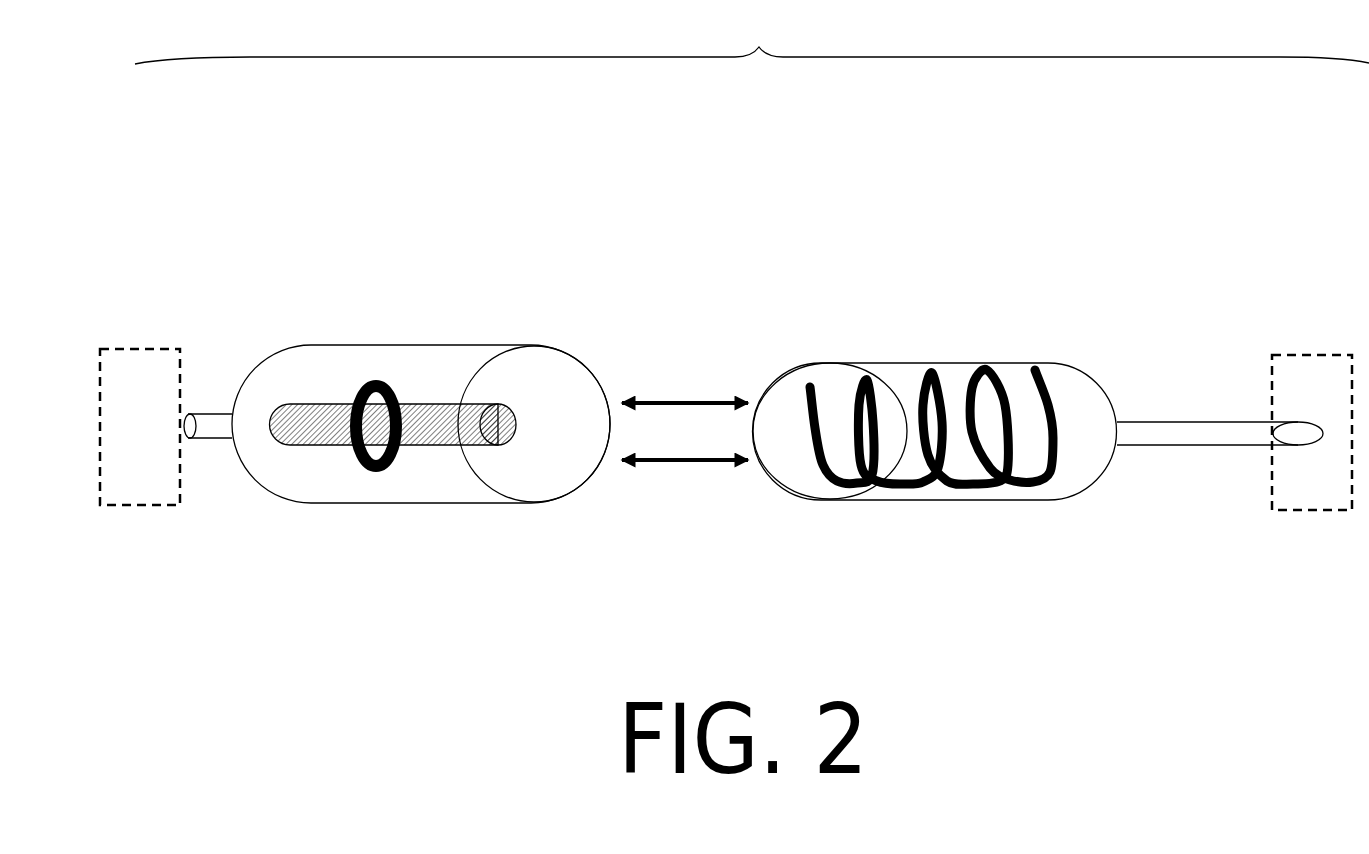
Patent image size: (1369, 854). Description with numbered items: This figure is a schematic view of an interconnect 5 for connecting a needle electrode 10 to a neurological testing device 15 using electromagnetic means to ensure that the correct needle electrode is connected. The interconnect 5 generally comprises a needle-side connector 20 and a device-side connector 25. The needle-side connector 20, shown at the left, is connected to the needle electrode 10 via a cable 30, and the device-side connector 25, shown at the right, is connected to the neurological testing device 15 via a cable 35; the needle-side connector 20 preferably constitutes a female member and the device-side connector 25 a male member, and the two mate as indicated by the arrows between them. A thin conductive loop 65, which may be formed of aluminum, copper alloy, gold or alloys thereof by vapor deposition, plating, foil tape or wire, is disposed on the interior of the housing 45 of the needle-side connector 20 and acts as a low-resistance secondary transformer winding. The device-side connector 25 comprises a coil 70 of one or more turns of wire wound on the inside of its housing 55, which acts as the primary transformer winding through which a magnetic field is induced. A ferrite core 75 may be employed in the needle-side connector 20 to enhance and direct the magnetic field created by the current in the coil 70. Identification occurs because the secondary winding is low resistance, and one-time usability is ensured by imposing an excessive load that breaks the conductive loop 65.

The interconnect 5 is at (752, 37).
The needle electrode 10 is at (125, 528).
The neurological testing device 15 is at (1307, 528).
The needle-side connector 20 is at (548, 322).
The device-side connector 25 is at (798, 342).
The cable 30 is at (208, 452).
The cable 35 is at (1197, 449).
The housing 45 is at (308, 347).
The housing 55 is at (1067, 358).
The conductive loop 65 is at (355, 465).
The coil 70 is at (968, 488).
The ferrite core 75 is at (437, 448).